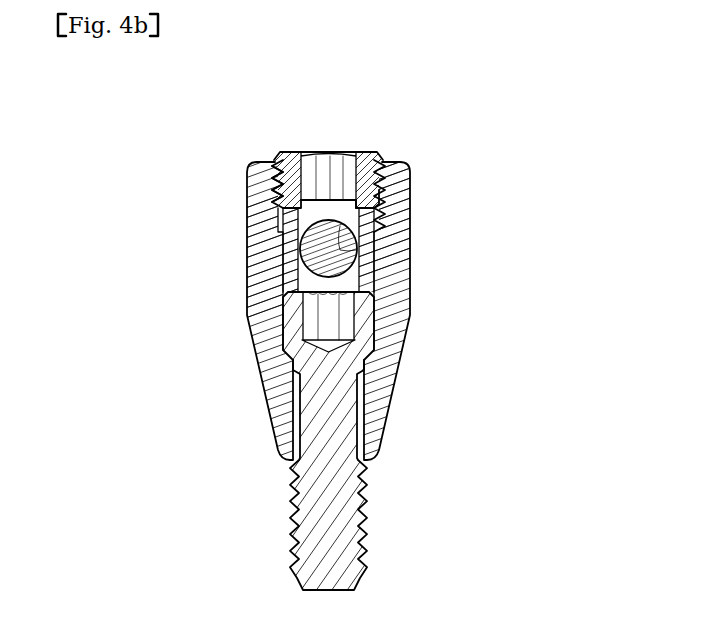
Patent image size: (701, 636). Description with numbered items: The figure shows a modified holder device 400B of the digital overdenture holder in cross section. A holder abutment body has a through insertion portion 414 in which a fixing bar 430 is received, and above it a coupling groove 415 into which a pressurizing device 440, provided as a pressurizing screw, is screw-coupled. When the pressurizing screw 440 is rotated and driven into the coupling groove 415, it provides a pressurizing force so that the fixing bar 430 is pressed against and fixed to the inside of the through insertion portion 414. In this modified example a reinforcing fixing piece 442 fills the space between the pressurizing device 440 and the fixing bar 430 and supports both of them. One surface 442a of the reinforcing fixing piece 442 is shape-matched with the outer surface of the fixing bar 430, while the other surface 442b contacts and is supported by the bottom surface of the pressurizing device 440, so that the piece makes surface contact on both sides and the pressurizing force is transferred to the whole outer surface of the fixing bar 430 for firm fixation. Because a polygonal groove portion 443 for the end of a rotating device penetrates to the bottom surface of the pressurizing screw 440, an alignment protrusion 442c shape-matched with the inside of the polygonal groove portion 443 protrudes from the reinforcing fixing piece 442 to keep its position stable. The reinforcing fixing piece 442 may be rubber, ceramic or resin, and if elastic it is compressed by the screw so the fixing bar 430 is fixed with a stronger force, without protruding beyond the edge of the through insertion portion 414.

The holder device 400B is at (192, 115).
The coupling groove 415 is at (393, 200).
The through insertion portion 414 is at (296, 228).
The fixing bar 430 is at (291, 249).
The pressurizing device 440 is at (327, 182).
The reinforcing fixing piece 442 is at (313, 201).
The one surface of the reinforcing fixing piece 442a is at (356, 252).
The other surface of the reinforcing fixing piece 442b is at (353, 204).
The alignment protrusion 442c is at (283, 198).
The polygonal groove portion 443 is at (378, 163).